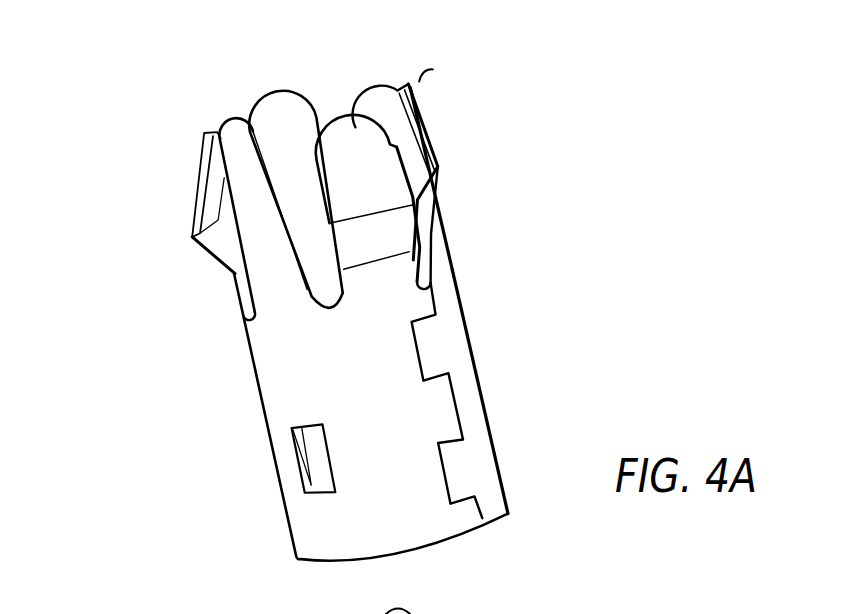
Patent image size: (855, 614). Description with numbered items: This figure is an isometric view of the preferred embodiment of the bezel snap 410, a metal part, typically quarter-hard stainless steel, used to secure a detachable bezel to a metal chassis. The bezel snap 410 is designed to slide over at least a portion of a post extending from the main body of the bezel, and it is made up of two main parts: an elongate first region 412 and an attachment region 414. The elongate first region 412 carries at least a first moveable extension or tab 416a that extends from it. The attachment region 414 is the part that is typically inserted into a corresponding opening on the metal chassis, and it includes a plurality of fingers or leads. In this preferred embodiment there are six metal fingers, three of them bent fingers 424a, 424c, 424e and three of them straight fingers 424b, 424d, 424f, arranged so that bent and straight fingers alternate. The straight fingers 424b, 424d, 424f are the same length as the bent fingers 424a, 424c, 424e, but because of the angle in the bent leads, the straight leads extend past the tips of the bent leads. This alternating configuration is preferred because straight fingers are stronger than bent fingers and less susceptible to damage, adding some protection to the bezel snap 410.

The bezel snap 410 is at (140, 175).
The elongate first region 412 is at (535, 510).
The attachment region 414 is at (432, 62).
The first moveable extension or tab 416a is at (312, 470).
The bent finger 424a is at (332, 122).
The straight finger 424b is at (231, 127).
The bent finger 424c is at (207, 140).
The straight finger 424d is at (275, 89).
The bent finger 424e is at (388, 84).
The straight finger 424f is at (432, 62).